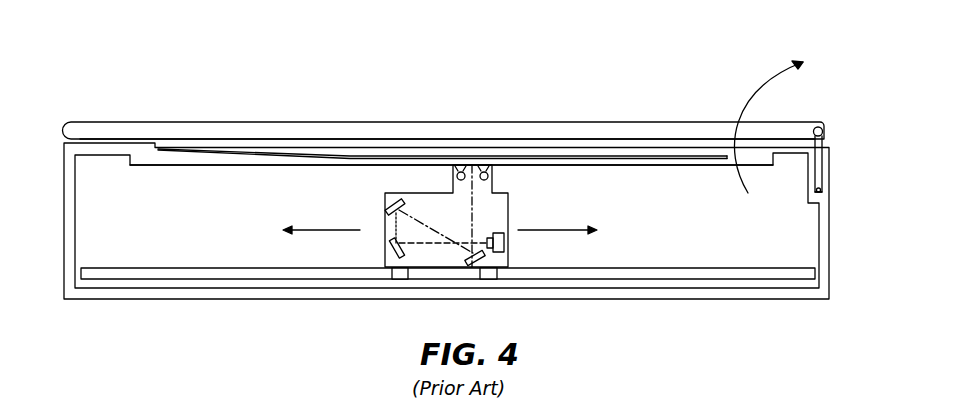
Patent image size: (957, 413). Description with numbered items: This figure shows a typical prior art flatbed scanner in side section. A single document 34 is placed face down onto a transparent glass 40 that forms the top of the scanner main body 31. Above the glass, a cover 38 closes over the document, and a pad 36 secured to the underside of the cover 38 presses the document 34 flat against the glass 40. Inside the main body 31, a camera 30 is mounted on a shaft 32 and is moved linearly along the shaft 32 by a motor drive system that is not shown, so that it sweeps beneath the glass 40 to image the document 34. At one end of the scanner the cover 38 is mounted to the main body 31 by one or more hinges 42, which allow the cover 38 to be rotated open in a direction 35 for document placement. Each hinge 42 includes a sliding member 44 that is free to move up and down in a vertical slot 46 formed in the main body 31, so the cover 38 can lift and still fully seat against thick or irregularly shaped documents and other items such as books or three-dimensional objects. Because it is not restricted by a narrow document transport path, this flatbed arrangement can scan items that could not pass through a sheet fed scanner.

The camera 30 is at (509, 208).
The scanner main body 31 is at (793, 296).
The shaft 32 is at (588, 272).
The document 34 is at (412, 156).
The direction 35 is at (757, 84).
The pad 36 is at (257, 140).
The cover 38 is at (200, 130).
The transparent glass 40 is at (227, 167).
The hinges 42 is at (820, 124).
The sliding members 44 is at (823, 144).
The vertical slots 46 is at (819, 194).